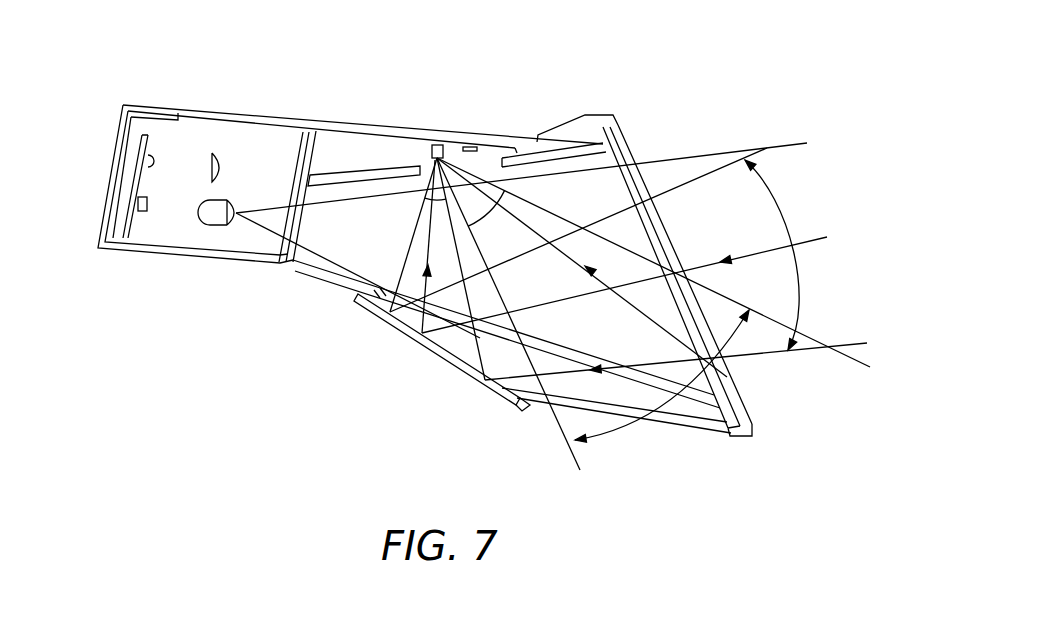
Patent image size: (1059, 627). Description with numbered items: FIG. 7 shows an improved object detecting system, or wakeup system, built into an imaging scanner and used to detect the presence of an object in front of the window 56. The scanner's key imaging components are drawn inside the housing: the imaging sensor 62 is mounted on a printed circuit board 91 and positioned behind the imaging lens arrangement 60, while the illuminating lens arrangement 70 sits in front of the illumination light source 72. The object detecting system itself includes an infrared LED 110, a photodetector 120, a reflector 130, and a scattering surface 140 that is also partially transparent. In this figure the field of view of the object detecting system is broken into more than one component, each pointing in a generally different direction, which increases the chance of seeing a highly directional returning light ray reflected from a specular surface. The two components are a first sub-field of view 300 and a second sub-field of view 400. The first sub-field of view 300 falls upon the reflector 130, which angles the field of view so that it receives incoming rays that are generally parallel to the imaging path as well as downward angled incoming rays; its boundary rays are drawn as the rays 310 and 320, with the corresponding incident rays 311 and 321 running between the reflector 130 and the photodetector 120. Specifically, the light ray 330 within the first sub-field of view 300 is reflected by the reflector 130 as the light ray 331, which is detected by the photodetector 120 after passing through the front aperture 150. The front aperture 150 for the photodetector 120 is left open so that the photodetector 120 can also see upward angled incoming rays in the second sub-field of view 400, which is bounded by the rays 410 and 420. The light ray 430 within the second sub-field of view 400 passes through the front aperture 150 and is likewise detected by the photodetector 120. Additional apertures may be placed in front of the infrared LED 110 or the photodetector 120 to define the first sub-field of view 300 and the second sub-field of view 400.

The window 56 is at (613, 136).
The imaging lens arrangement 60 is at (211, 228).
The imaging sensor 62 is at (150, 203).
The illuminating lens arrangement 70 is at (212, 151).
The illumination light source 72 is at (150, 148).
The printed circuit board 91 is at (122, 178).
The infrared LED 110 is at (470, 145).
The photodetector 120 is at (432, 147).
The reflector 130 is at (421, 342).
The scattering surface 140 is at (586, 341).
The front aperture 150 is at (485, 158).
The first sub-field of view 300 is at (770, 187).
The upper reflected ray 310 is at (723, 162).
The incident ray 311 is at (407, 257).
The lower reflected ray 320 is at (770, 358).
The incident ray 321 is at (460, 260).
The light ray 330 is at (703, 263).
The light ray 331 is at (430, 223).
The second sub-field of view 400 is at (630, 434).
The upper direct ray 410 is at (768, 310).
The lower direct ray 420 is at (562, 433).
The light ray 430 is at (556, 248).